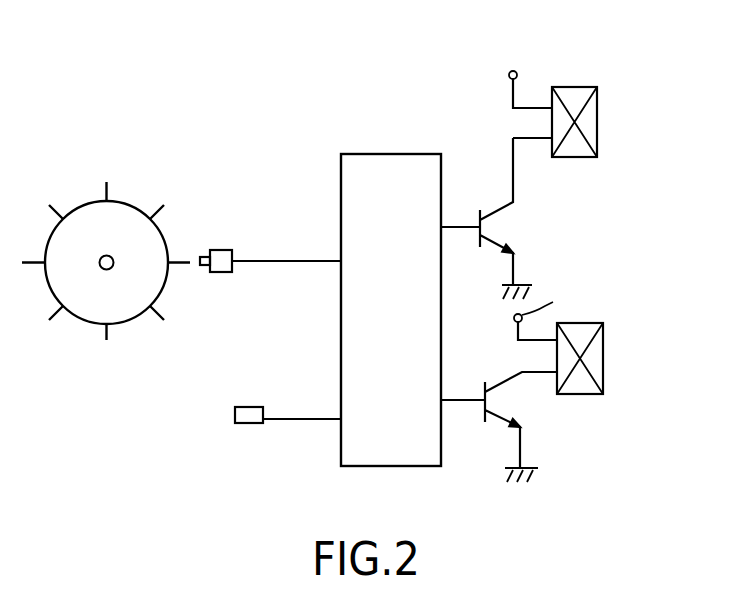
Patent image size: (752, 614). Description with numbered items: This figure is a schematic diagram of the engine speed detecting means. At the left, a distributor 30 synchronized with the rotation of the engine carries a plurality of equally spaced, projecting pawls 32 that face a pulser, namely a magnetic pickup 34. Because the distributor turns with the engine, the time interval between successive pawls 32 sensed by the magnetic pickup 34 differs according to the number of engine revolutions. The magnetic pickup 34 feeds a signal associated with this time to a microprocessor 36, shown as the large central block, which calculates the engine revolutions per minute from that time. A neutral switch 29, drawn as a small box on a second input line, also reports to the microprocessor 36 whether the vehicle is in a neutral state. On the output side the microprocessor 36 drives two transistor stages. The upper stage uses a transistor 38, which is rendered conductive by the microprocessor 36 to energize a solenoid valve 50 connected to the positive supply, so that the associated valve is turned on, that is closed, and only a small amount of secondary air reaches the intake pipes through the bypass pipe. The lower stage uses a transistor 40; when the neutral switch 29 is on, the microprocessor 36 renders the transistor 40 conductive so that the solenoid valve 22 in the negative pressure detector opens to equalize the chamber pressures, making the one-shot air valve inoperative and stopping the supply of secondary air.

The solenoid valve 22 is at (603, 363).
The neutral switch 29 is at (255, 423).
The distributor 30 is at (76, 318).
The projecting pawl 32 is at (106, 340).
The magnetic pickup 34 is at (225, 273).
The microprocessor 36 is at (393, 466).
The transistor 38 is at (490, 227).
The transistor 40 is at (491, 382).
The solenoid valve 50 is at (597, 132).